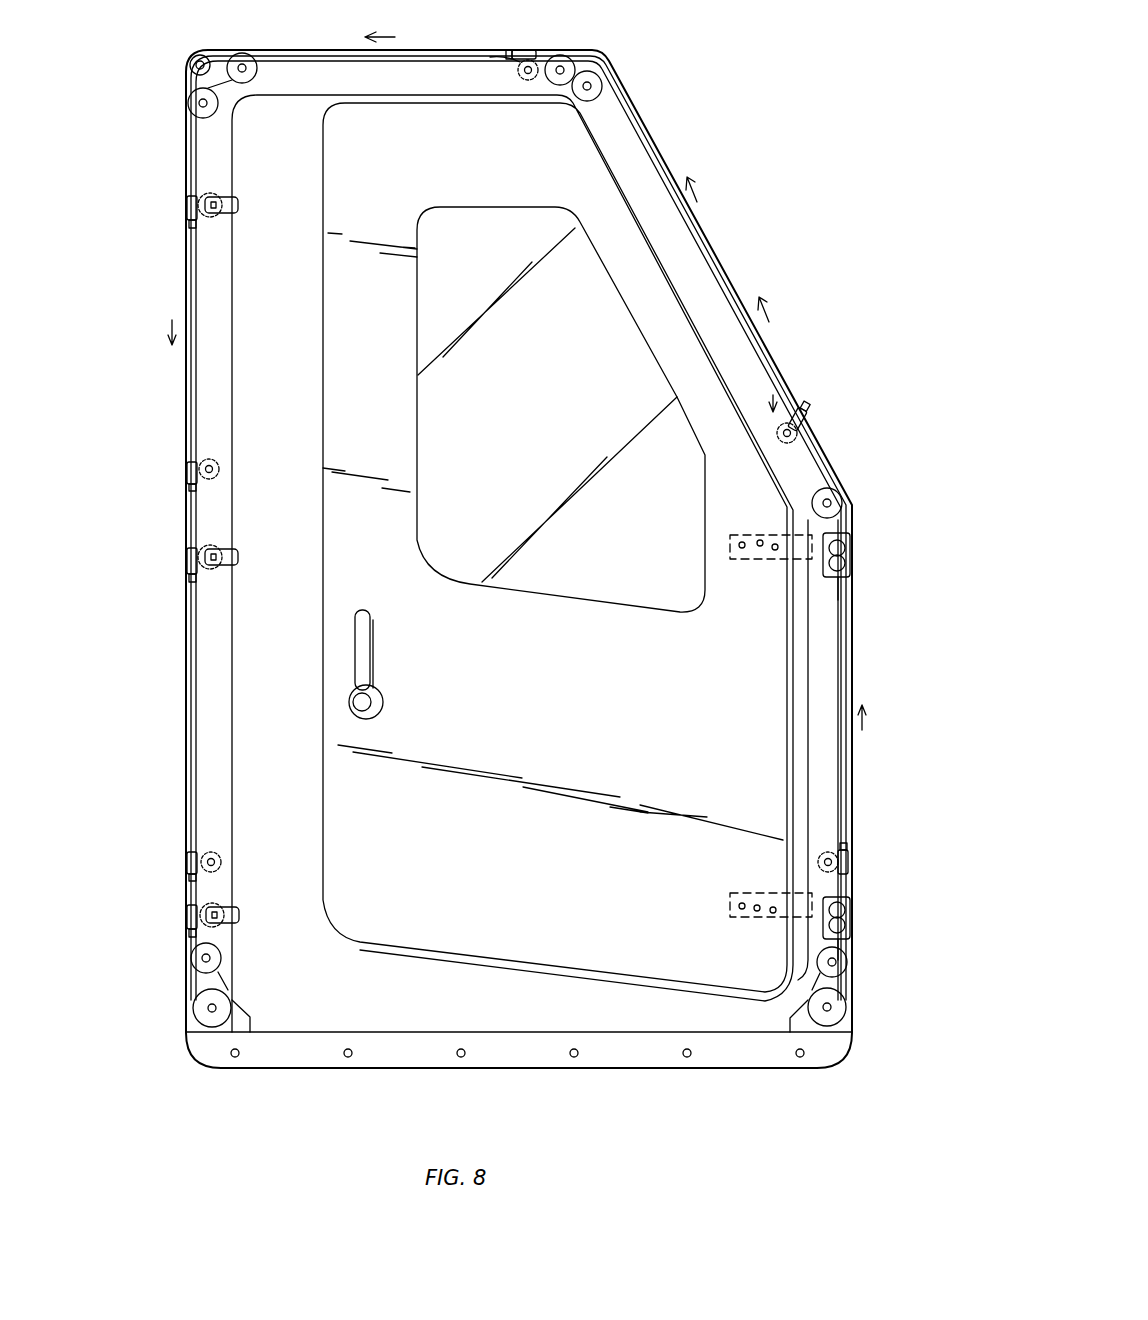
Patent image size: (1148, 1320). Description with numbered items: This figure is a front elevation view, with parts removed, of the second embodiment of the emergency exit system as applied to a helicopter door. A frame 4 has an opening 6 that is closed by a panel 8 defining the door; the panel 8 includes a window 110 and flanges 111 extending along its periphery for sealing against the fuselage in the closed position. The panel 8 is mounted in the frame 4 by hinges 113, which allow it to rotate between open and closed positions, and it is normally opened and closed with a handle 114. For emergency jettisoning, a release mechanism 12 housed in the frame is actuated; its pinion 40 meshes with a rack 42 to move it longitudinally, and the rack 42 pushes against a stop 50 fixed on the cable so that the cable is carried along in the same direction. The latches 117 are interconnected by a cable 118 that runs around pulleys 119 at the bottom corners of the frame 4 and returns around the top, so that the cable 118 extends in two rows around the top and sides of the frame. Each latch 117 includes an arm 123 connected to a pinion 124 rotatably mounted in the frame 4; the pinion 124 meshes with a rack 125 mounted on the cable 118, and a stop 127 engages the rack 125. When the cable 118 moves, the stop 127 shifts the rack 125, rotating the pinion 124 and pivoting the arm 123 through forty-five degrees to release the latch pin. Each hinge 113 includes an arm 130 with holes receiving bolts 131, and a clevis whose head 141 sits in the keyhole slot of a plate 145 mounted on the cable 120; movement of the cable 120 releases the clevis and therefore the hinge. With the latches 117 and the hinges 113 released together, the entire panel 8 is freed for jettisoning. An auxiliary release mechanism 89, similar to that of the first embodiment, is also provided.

The frame 4 is at (212, 390).
The opening 6 is at (318, 997).
The panel 8 is at (563, 747).
The release mechanism 12 is at (773, 390).
The pinion 40 is at (520, 62).
The rack 42 is at (536, 52).
The stop 50 is at (515, 50).
The auxiliary release mechanism 89 is at (188, 55).
The window 110 is at (545, 441).
The flanges 111 is at (345, 100).
The hinges 113 is at (728, 549).
The handle 114 is at (362, 660).
The latches 117 is at (240, 205).
The cable 118 is at (703, 250).
The pulleys 119 is at (200, 1010).
The cable 120 is at (250, 68).
The arm 123 is at (212, 197).
The pinion 124 is at (212, 217).
The rack 125 is at (186, 205).
The stop 127 is at (190, 225).
The arm 130 is at (744, 548).
The bolts 131 is at (760, 540).
The head 141 is at (840, 548).
The plate 145 is at (852, 580).